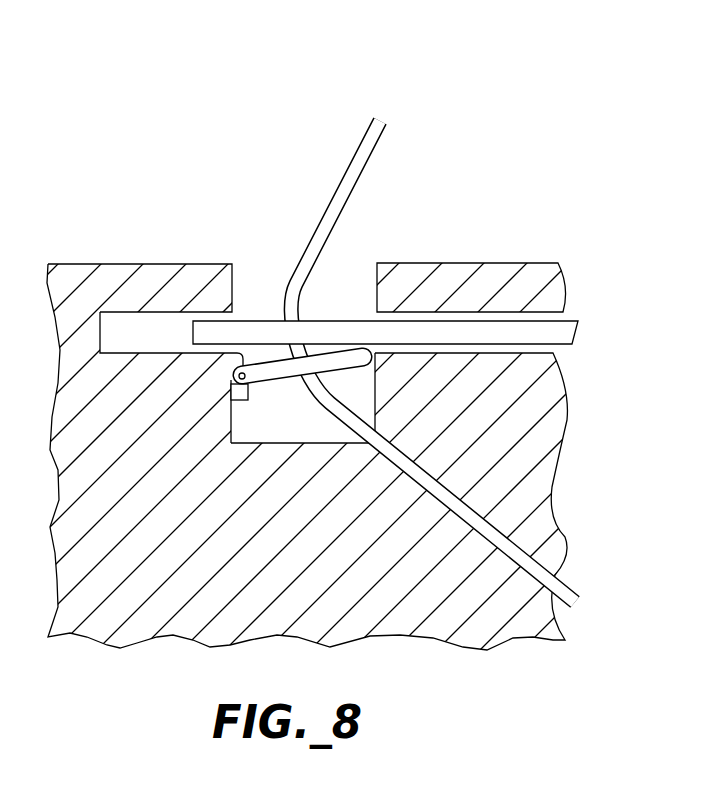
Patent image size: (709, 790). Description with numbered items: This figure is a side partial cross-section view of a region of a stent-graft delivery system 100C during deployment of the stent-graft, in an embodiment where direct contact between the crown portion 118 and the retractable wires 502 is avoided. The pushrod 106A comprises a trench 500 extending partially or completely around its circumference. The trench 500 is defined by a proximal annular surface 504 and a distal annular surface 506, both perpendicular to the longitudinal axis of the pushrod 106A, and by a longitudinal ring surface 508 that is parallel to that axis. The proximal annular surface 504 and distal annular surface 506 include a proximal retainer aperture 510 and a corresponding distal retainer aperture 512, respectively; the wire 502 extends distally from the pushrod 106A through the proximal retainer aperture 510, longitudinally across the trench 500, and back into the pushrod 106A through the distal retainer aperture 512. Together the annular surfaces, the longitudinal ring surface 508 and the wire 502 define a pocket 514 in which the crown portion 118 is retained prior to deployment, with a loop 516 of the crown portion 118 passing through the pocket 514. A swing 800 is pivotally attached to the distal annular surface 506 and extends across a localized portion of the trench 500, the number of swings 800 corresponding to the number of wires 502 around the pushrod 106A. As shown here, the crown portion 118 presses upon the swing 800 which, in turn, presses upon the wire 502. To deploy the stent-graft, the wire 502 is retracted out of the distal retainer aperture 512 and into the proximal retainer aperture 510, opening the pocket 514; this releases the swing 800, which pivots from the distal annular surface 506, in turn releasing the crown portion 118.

The stent-graft delivery system 100C is at (201, 154).
The pushrod 106A is at (300, 564).
The crown portion 118 is at (356, 157).
The loop 516 is at (352, 186).
The distal retainer aperture 512 is at (240, 300).
The proximal retainer aperture 510 is at (362, 298).
The wire 502 is at (456, 327).
The proximal annular surface 504 is at (376, 398).
The distal annular surface 506 is at (232, 408).
The longitudinal ring surface 508 is at (297, 443).
The pocket 514 is at (292, 419).
The trench 500 is at (280, 342).
The swing 800 is at (259, 366).